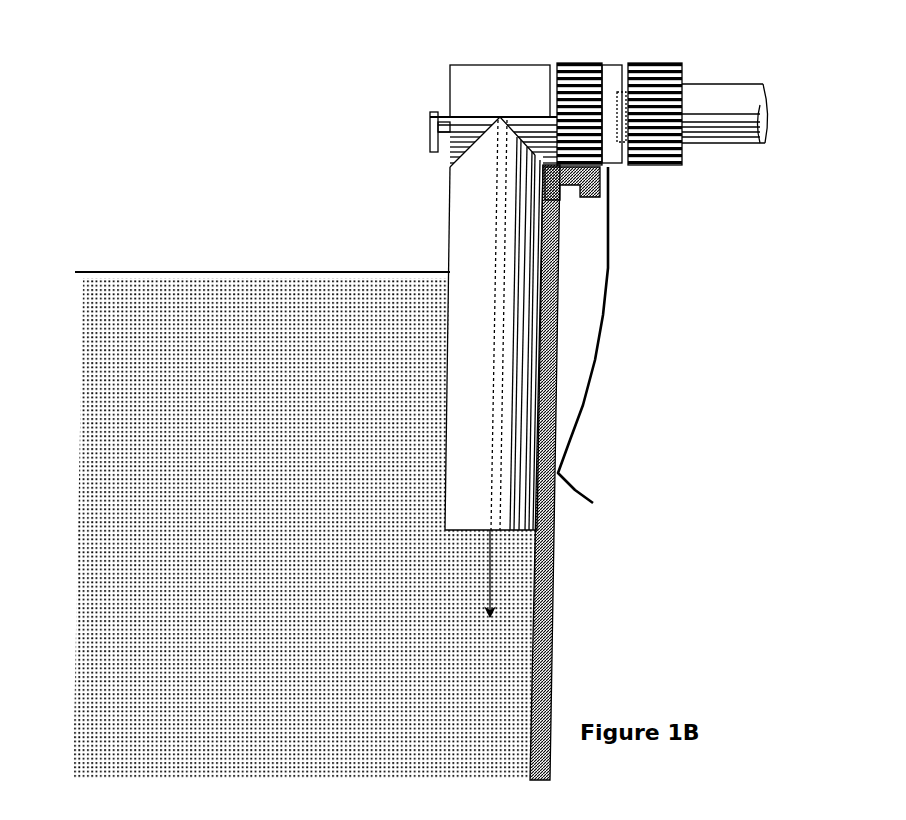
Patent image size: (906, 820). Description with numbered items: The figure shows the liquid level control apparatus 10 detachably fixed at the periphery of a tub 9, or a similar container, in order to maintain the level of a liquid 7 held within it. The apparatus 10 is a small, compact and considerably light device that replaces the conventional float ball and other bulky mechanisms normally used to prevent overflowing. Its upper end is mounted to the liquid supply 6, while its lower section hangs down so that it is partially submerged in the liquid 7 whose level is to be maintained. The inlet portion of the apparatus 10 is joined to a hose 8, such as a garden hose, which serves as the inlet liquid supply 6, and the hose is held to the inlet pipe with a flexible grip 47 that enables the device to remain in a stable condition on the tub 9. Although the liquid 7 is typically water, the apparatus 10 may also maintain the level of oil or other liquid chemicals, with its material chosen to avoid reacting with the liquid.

The liquid supply 6 is at (783, 114).
The liquid 7 is at (500, 678).
The hose 8 is at (743, 78).
The tub 9 is at (546, 577).
The apparatus 10 is at (513, 56).
The flexible grip 47 is at (581, 429).